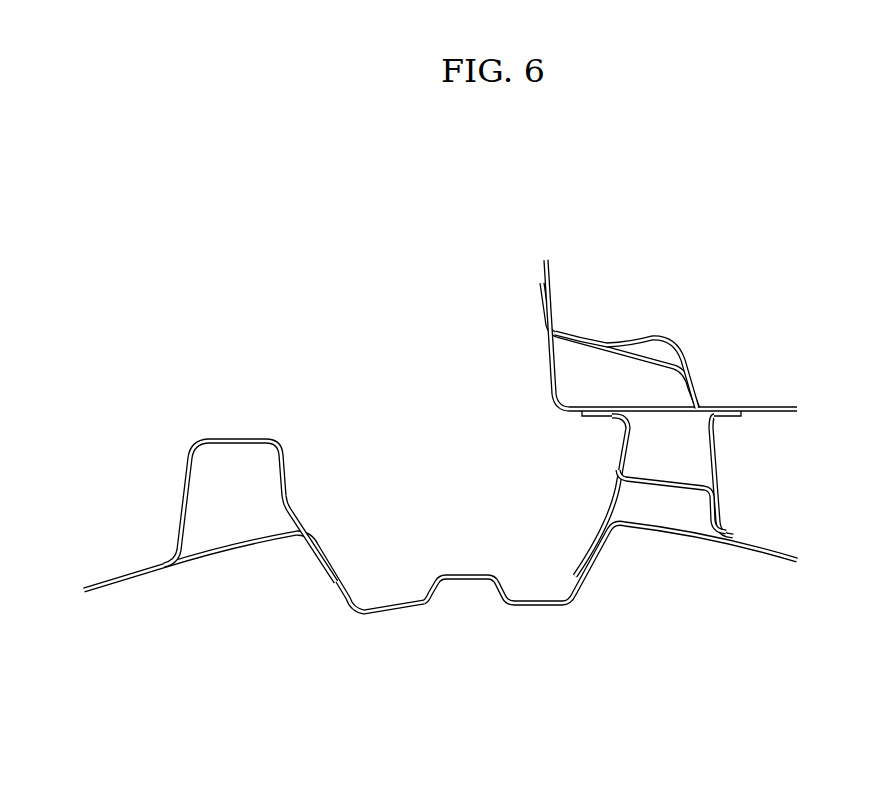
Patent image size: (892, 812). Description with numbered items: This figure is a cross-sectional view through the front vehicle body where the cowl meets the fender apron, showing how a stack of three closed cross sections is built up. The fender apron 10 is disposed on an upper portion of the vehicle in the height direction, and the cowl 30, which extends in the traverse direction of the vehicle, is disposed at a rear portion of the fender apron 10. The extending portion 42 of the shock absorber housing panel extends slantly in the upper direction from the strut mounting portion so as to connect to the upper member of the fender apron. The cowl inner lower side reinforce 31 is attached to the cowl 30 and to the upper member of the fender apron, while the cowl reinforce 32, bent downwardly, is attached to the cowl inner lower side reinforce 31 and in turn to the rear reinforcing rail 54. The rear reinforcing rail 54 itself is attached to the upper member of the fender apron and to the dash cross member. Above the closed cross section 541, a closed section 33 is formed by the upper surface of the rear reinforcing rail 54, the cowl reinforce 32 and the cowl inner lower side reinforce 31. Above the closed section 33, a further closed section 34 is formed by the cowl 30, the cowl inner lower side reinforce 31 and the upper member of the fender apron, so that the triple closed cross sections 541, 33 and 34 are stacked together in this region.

The fender apron 10 is at (116, 584).
The cowl 30 is at (552, 290).
The cowl inner lower side reinforce 31 is at (620, 453).
The cowl reinforce 32 is at (543, 357).
The closed section 33 is at (667, 450).
The closed section 34 is at (581, 383).
The extending portion 42 is at (437, 594).
The rear reinforcing rail 54 is at (682, 483).
The closed cross section 541 is at (666, 506).